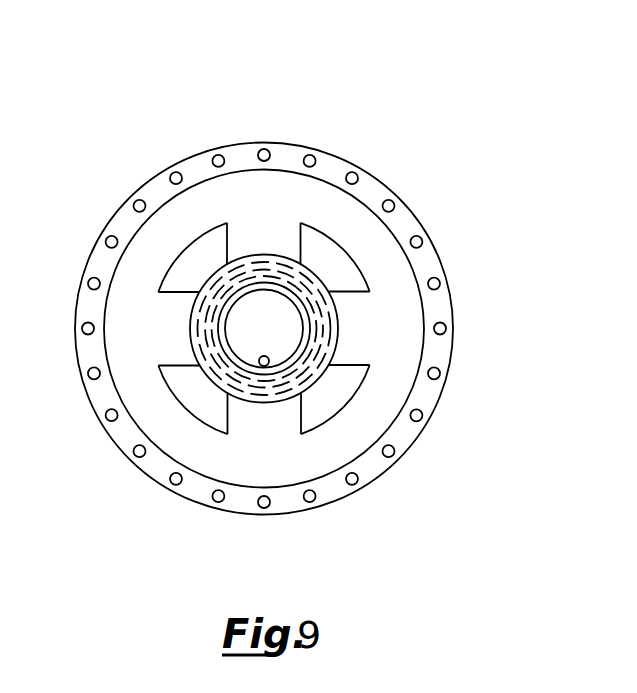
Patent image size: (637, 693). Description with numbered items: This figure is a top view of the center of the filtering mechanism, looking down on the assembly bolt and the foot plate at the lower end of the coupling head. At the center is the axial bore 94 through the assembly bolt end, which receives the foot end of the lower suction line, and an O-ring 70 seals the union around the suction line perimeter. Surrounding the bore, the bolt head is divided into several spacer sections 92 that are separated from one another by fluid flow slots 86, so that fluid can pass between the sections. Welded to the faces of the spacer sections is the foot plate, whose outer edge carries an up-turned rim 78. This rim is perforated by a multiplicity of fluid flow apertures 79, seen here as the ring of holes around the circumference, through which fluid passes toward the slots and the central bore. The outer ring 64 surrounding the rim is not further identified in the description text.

The housing outer wall 64 is at (412, 213).
The mounting flange 78 is at (122, 218).
The bolt holes 79 is at (88, 284).
The vanes 86 is at (365, 323).
The slots 92 is at (217, 237).
The bearing 94 is at (223, 327).
The shaft bore 70 is at (262, 366).